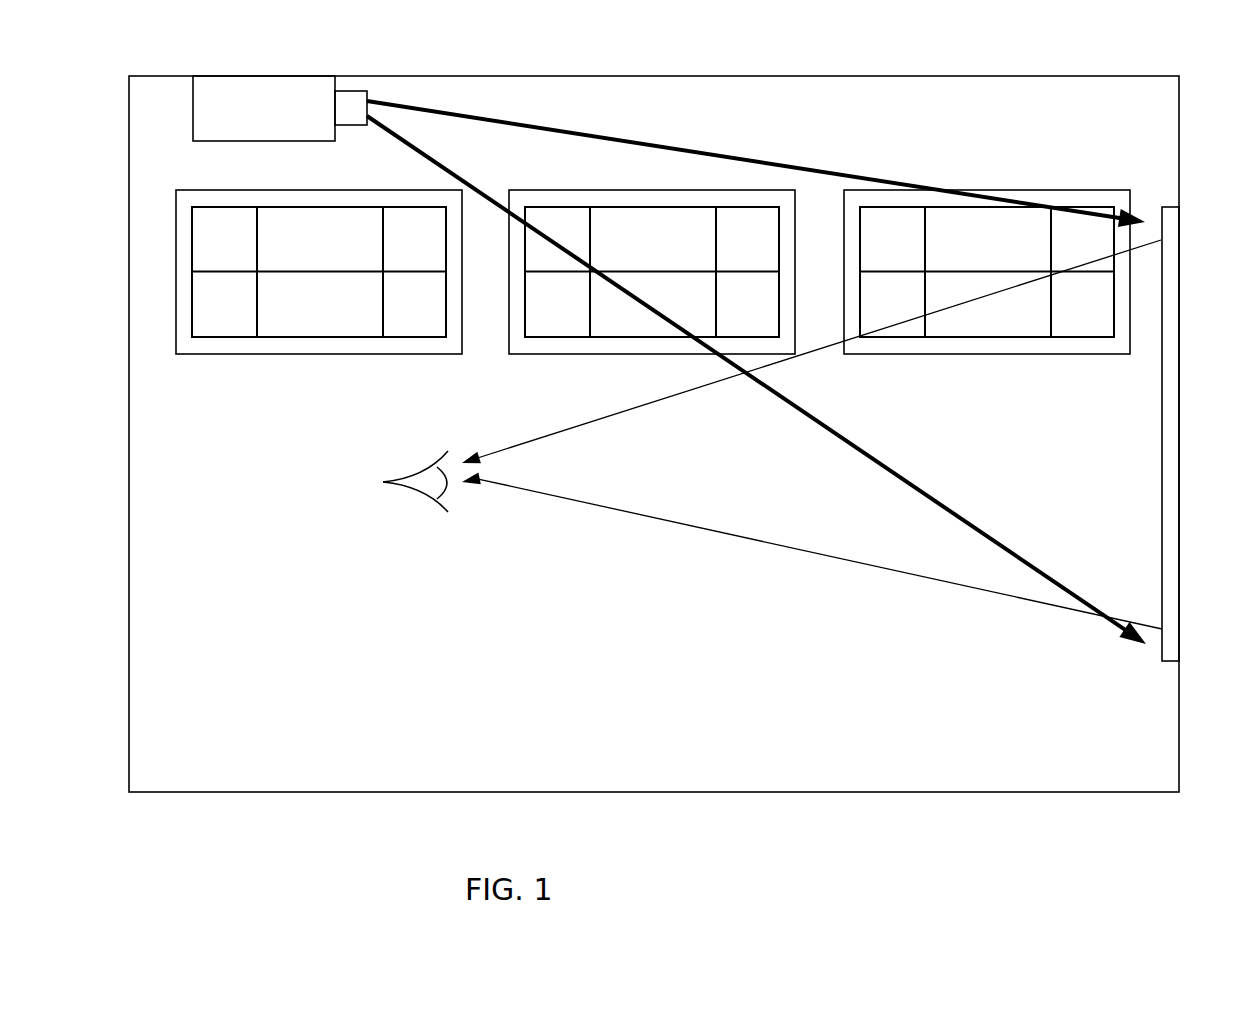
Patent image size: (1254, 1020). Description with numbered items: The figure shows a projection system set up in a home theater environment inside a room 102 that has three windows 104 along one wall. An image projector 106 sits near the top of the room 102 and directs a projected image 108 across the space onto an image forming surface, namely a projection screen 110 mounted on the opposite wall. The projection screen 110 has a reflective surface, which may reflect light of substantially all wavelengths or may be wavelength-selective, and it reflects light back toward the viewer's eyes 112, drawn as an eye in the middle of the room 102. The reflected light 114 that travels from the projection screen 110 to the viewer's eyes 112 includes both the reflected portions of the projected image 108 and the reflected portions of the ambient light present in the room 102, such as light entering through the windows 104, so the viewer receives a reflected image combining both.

The room 102 is at (990, 75).
The windows 104 is at (250, 190).
The image projector 106 is at (305, 75).
The projected image 108 is at (700, 151).
The projection screen 110 is at (1172, 289).
The viewer's eyes 112 is at (415, 511).
The reflected light 114 is at (600, 422).